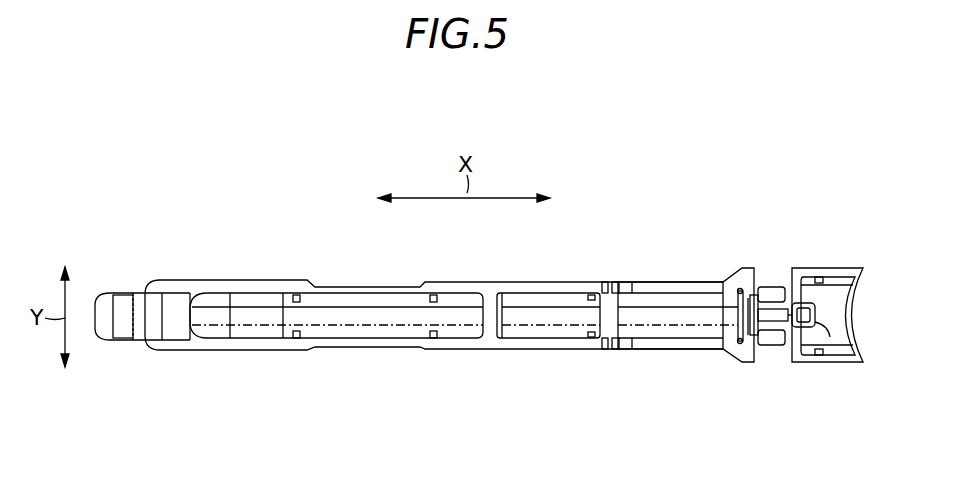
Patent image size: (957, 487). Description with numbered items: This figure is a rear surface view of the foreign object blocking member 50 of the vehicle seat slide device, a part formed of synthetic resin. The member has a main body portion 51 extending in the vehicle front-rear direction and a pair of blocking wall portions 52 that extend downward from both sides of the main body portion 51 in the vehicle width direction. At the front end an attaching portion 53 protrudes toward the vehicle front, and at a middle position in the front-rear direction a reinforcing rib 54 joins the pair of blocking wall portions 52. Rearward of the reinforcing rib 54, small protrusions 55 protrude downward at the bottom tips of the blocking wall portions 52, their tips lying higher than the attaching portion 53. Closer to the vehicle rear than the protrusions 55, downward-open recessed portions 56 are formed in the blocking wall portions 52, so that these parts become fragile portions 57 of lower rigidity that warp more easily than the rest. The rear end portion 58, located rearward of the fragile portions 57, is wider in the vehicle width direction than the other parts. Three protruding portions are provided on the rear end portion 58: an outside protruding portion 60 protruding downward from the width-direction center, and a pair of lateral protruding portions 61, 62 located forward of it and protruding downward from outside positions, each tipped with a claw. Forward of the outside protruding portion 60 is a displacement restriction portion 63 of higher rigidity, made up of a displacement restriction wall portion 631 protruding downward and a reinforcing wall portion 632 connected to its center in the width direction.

The foreign object blocking member 50 is at (262, 226).
The main body portion 51 is at (420, 313).
The blocking wall portions 52 is at (317, 340).
The attaching portion 53 is at (118, 310).
The reinforcing rib 54 is at (503, 313).
The protrusions 55 is at (592, 293).
The recessed portions 56 is at (628, 350).
The fragile portions 57 is at (677, 283).
The rear end portion 58 is at (847, 308).
The outside protruding portion 60 is at (822, 328).
The first lateral protruding portion 61 is at (770, 346).
The second lateral protruding portion 62 is at (772, 287).
The displacement restriction portion 63 is at (709, 368).
The displacement restriction wall portion 631 is at (733, 312).
The reinforcing wall portion 632 is at (755, 338).